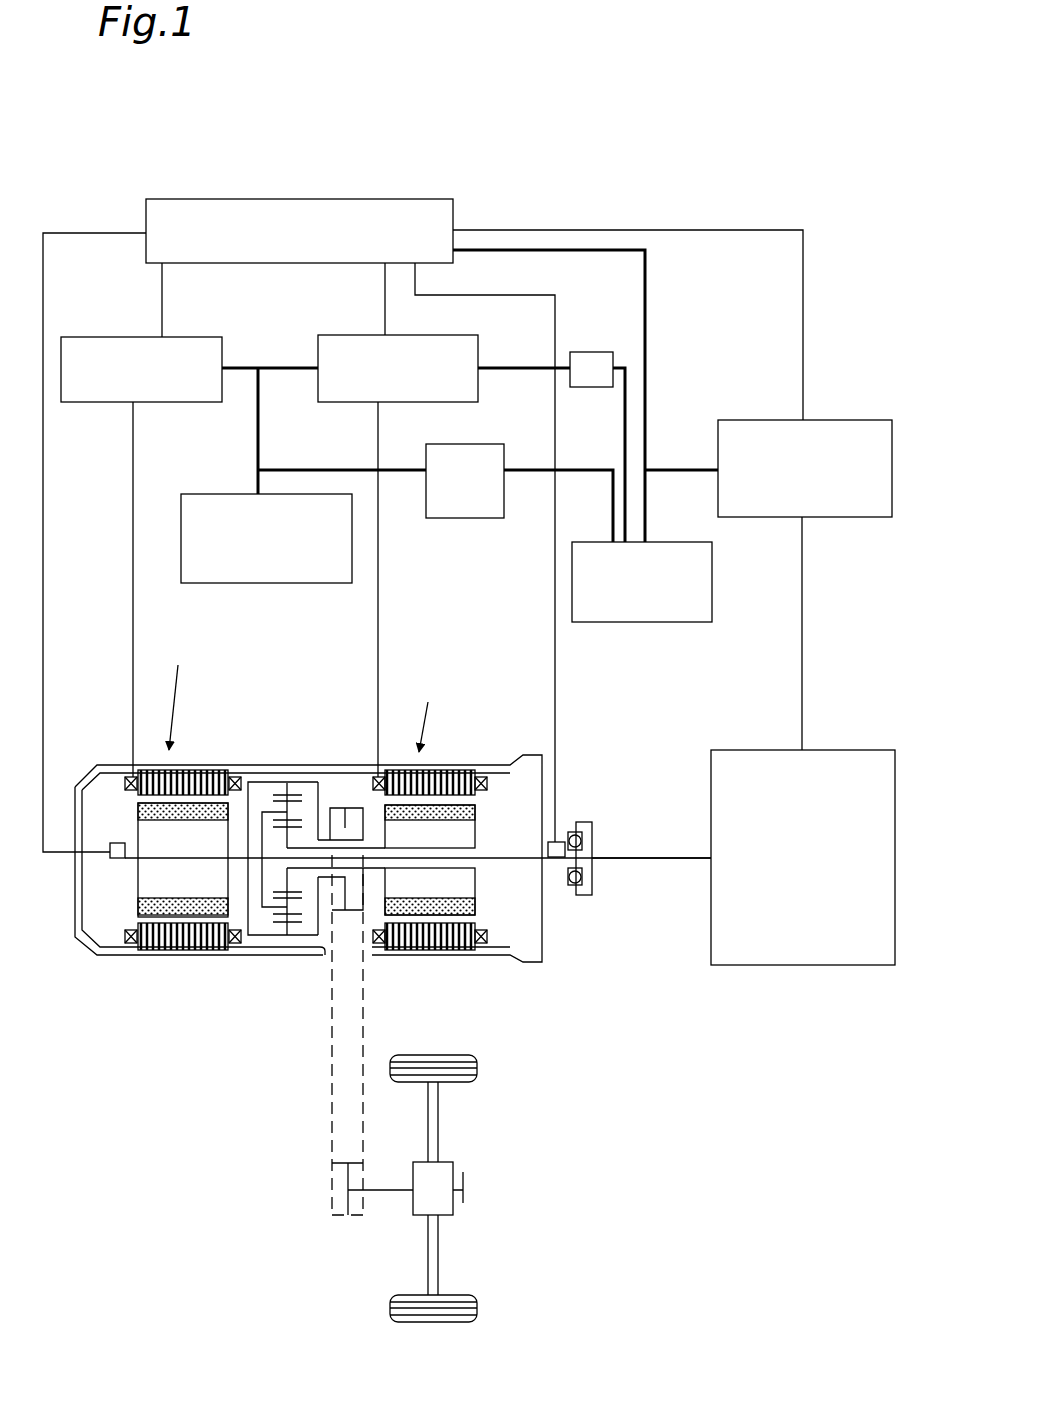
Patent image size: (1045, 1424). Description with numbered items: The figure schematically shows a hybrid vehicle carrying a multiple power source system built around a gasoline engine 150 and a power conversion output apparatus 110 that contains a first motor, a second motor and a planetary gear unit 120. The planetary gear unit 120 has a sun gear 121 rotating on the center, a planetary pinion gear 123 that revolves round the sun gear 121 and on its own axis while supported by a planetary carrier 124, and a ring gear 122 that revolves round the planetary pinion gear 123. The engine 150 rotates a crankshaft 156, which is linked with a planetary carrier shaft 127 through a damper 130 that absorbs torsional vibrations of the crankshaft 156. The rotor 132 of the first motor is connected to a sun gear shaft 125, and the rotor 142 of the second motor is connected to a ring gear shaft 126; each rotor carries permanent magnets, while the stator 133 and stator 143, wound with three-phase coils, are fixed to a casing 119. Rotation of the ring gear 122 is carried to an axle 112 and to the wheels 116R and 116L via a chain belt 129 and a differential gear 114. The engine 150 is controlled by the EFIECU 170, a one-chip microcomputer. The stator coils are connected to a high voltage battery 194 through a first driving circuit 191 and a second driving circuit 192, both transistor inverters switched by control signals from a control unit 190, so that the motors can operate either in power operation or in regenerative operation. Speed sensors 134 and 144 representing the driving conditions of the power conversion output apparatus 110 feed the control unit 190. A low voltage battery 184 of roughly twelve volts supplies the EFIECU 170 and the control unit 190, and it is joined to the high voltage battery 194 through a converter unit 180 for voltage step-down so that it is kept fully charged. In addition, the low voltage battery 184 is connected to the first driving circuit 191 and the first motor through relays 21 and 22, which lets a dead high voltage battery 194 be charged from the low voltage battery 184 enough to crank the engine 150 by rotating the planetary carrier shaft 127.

The control unit 190 is at (430, 199).
The second driving circuit 192 is at (196, 337).
The first driving circuit 191 is at (318, 342).
The relay 21 is at (606, 321).
The relay 22 is at (585, 352).
The EFIECU 170 is at (830, 420).
The high voltage battery 194 is at (182, 494).
The converter unit 180 is at (452, 518).
The low voltage battery 184 is at (612, 622).
The engine 150 is at (722, 750).
The power conversion output apparatus 110 is at (370, 845).
The casing 119 is at (117, 958).
The planetary gear unit 120 is at (280, 766).
The sun gear 121 is at (330, 808).
The ring gear 122 is at (287, 800).
The planetary pinion gear 123 is at (255, 782).
The planetary carrier 124 is at (262, 812).
The sun gear shaft 125 is at (360, 807).
The ring gear shaft 126 is at (152, 858).
The planetary carrier shaft 127 is at (521, 860).
The chain belt 129 is at (332, 1112).
The damper 130 is at (585, 895).
The rotor of first motor MG1 132 is at (462, 838).
The stator of first motor MG1 133 is at (462, 777).
The speed sensor 134 is at (562, 842).
The rotor of second motor MG2 142 is at (137, 880).
The stator of second motor MG2 143 is at (153, 770).
The speed sensor 144 is at (117, 843).
The crankshaft 156 is at (648, 858).
The axle 112 is at (438, 1118).
The differential gear 114 is at (453, 1166).
The right wheel 116R is at (477, 1068).
The left wheel 116L is at (477, 1308).